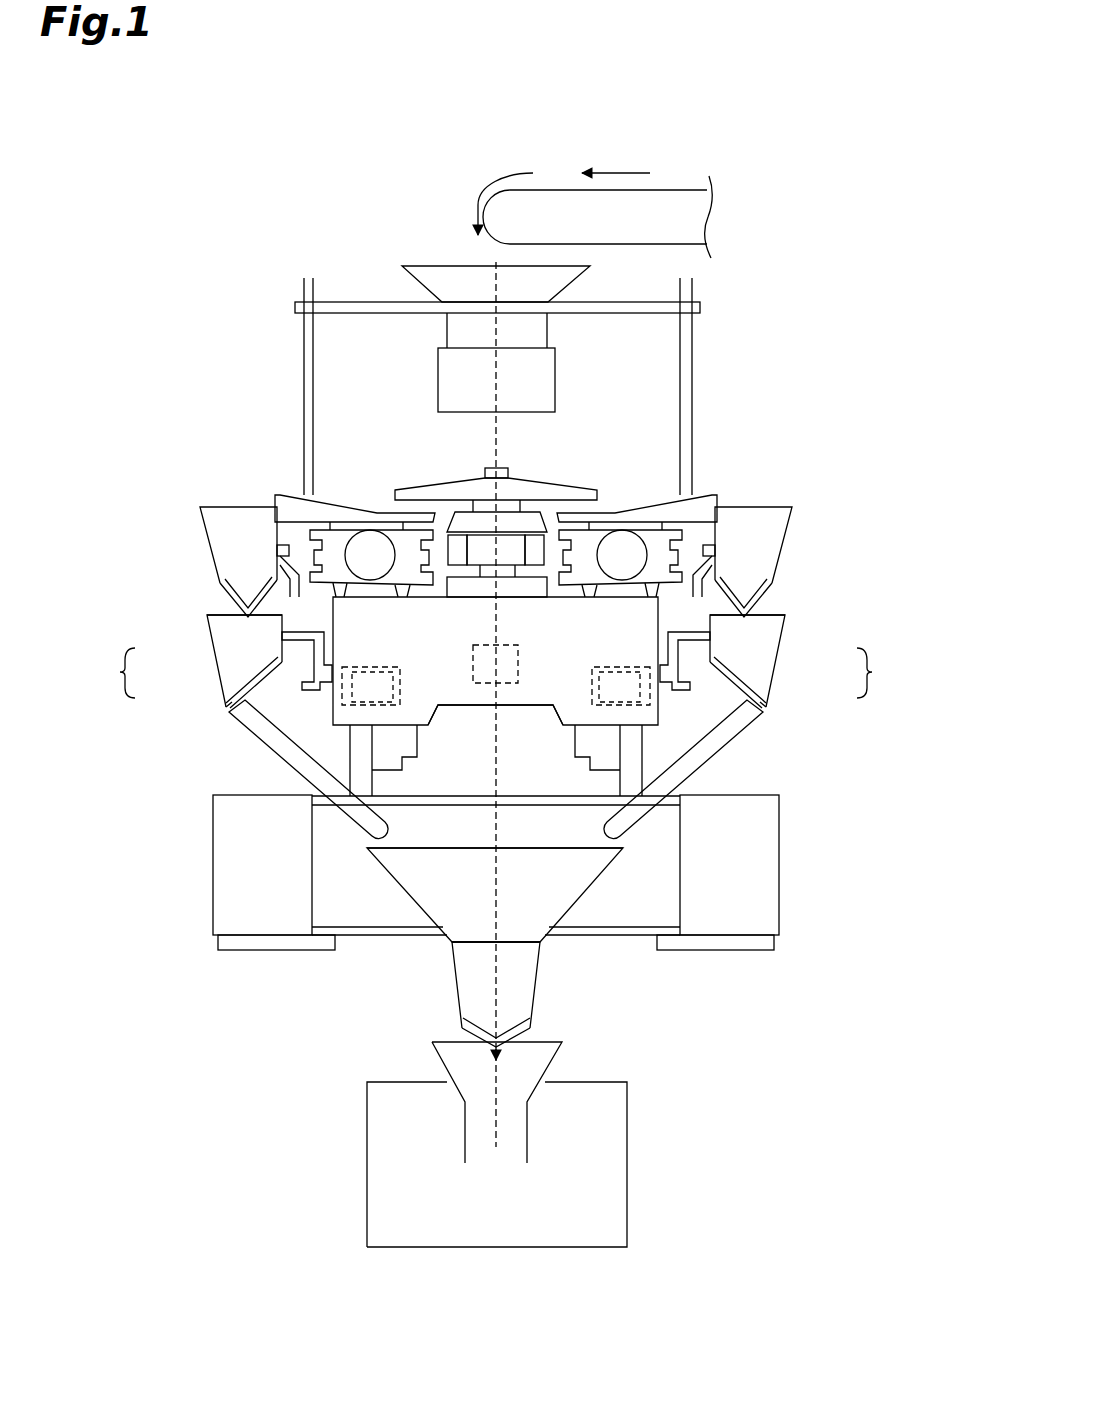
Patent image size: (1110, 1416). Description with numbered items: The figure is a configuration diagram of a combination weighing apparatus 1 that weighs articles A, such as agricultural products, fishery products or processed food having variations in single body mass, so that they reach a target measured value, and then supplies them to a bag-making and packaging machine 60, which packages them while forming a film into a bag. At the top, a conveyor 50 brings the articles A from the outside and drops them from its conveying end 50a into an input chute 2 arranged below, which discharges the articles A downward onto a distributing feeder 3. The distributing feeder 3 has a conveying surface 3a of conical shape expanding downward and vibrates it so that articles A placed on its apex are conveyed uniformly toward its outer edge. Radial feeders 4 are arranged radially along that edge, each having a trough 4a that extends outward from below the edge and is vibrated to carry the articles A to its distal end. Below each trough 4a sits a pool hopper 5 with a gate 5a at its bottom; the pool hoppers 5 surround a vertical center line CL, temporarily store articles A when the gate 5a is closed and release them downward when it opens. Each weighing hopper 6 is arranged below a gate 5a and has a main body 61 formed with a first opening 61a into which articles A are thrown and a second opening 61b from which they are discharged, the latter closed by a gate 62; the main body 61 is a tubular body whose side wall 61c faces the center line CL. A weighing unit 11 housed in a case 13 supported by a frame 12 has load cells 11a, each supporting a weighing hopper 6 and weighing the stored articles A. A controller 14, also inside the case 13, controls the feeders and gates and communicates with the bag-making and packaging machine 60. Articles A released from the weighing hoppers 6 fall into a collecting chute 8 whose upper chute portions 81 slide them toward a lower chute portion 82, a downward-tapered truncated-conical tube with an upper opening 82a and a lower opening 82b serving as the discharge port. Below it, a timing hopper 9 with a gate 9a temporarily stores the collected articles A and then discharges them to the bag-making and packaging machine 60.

The combination weighing apparatus 1 is at (240, 170).
The input chute 2 is at (440, 272).
The distributing feeder 3 is at (548, 480).
The conveying surface 3a is at (428, 482).
The radial feeder 4 is at (282, 497).
The trough 4a is at (322, 500).
The pool hopper 5 is at (212, 542).
The gate 5a is at (232, 600).
The weighing hopper 6 is at (497, 670).
The main body 61 is at (235, 655).
The first opening 61a is at (235, 622).
The second opening 61b is at (232, 707).
The side wall 61c is at (282, 645).
The gate 62 is at (240, 688).
The collecting chute 8 is at (496, 857).
The upper chute portion 81 is at (283, 740).
The lower chute portion 82 is at (572, 890).
The upper opening 82a is at (470, 846).
The lower opening 82b is at (477, 943).
The timing hopper 9 is at (522, 988).
The gate 9a is at (490, 1050).
The weighing unit 11 is at (495, 661).
The load cell 11a is at (397, 668).
The frame 12 is at (780, 848).
The case 13 is at (510, 693).
The controller 14 is at (487, 693).
The conveyor 50 is at (667, 203).
The conveying end 50a is at (508, 215).
The bag-making and packaging machine 60 is at (627, 1148).
The articles A is at (478, 186).
The center line CL is at (497, 880).